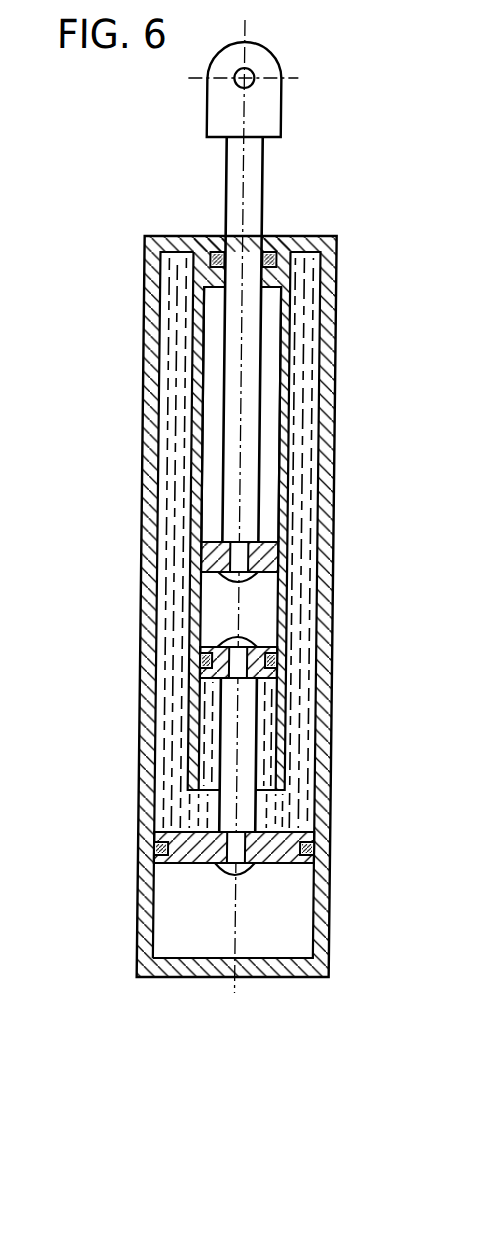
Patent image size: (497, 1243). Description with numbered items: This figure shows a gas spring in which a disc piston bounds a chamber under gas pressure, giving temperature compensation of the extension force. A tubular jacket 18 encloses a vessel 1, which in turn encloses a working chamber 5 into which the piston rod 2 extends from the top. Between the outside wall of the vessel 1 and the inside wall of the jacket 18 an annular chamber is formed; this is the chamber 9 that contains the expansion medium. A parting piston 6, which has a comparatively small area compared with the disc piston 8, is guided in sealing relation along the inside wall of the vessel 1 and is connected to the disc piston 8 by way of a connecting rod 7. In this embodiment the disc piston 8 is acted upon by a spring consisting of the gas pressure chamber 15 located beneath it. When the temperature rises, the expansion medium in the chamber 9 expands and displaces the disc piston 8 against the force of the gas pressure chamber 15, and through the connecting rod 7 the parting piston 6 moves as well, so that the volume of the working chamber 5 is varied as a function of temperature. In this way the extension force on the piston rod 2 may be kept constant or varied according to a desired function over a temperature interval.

The vessel 1 is at (200, 352).
The piston rod 2 is at (257, 183).
The working chamber 5 is at (276, 373).
The parting piston 6 is at (209, 648).
The connecting rod 7 is at (235, 767).
The disc piston 8 is at (292, 838).
The chamber containing the expansion medium 9 is at (313, 515).
The gas pressure chamber 15 is at (260, 927).
The tubular jacket 18 is at (155, 440).